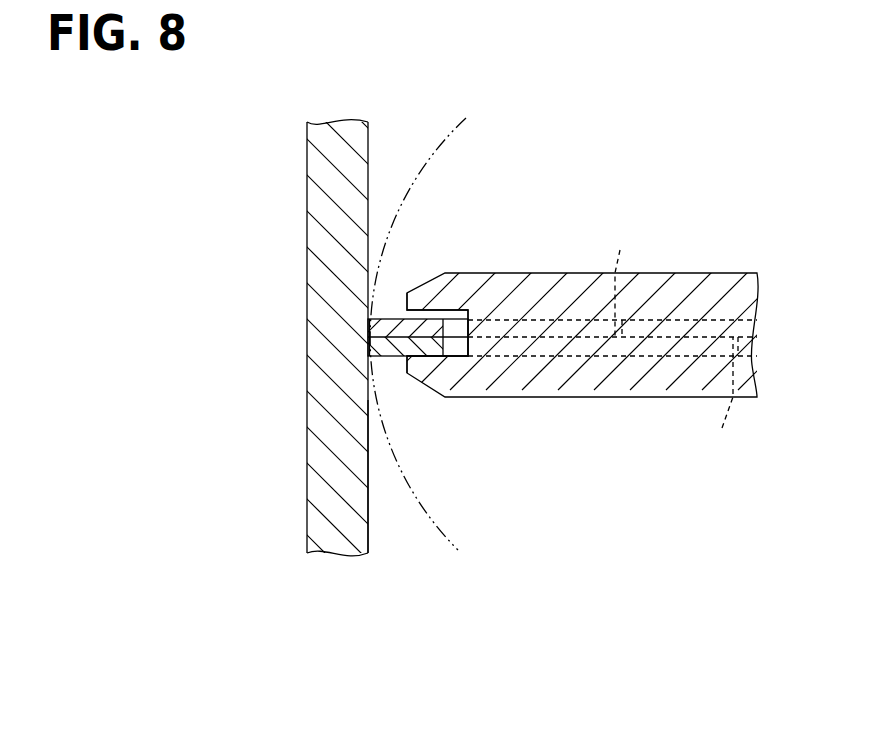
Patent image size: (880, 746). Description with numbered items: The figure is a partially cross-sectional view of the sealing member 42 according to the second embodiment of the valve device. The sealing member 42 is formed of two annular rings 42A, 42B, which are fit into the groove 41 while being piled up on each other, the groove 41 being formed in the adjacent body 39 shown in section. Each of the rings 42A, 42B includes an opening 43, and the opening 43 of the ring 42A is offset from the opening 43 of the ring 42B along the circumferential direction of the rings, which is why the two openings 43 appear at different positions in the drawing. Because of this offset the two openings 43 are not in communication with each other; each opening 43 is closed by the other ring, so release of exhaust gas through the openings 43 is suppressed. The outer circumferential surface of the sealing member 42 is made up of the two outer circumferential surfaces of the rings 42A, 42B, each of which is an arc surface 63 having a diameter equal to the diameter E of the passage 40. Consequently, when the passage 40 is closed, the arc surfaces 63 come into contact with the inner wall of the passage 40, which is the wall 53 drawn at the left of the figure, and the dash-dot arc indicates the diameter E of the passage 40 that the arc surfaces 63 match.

The holder body 39 is at (578, 372).
The passage 40 is at (368, 478).
The groove 41 is at (452, 311).
The sealing member 42 is at (337, 333).
The annular ring 42A is at (372, 330).
The annular ring 42B is at (372, 344).
The opening 43 is at (673, 340).
The wall 53 is at (328, 475).
The arc surface 63 is at (370, 321).
The diameter of the passage E is at (436, 150).